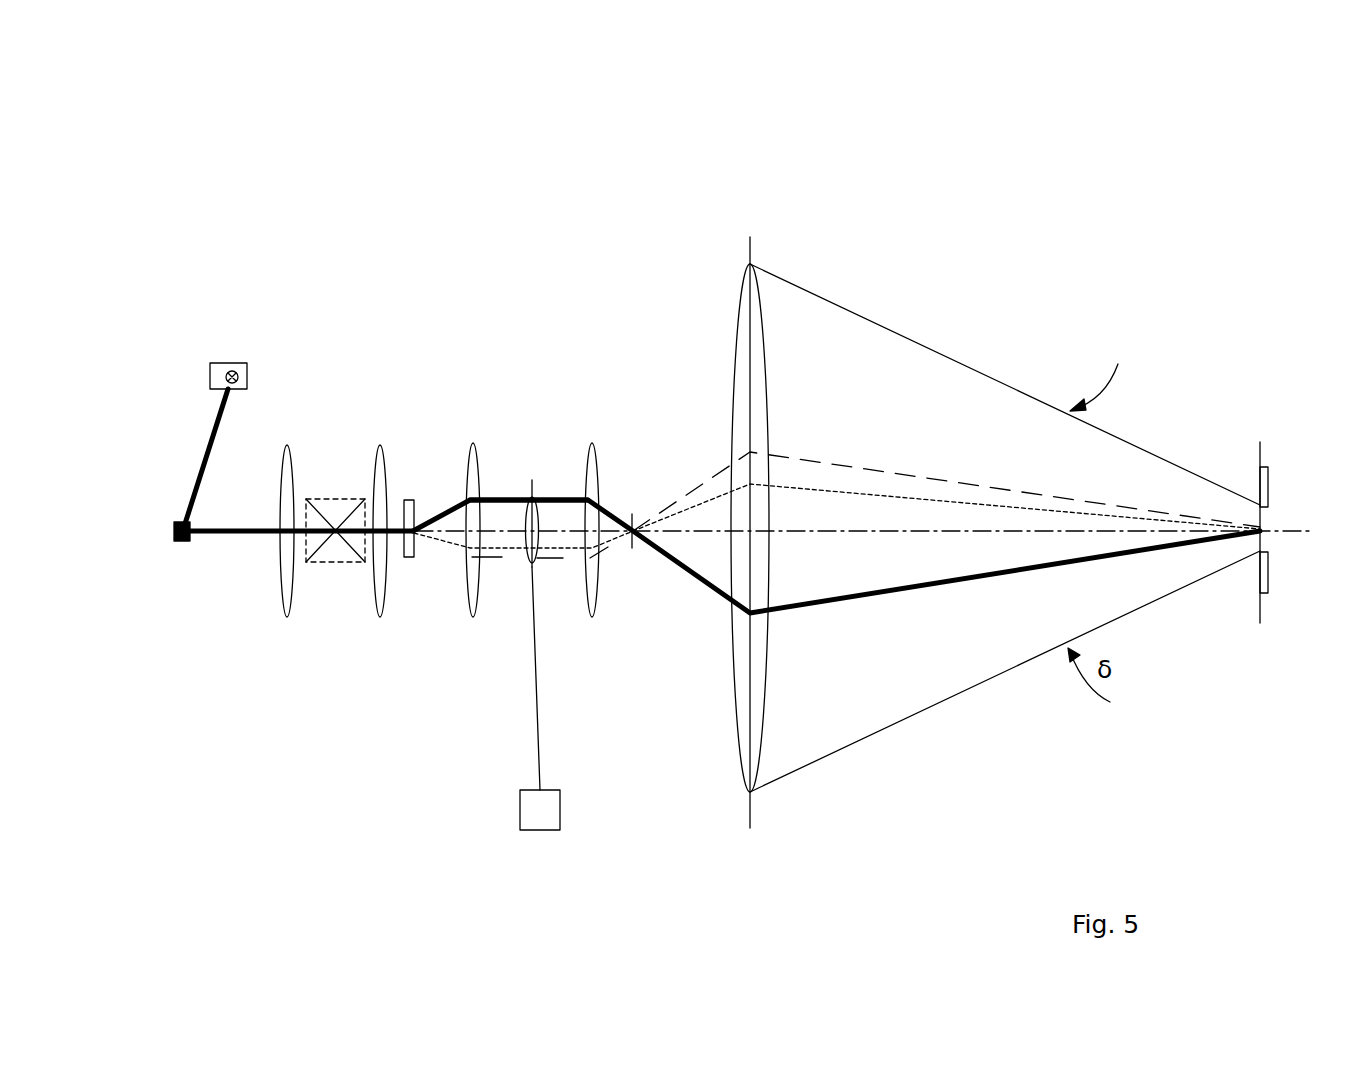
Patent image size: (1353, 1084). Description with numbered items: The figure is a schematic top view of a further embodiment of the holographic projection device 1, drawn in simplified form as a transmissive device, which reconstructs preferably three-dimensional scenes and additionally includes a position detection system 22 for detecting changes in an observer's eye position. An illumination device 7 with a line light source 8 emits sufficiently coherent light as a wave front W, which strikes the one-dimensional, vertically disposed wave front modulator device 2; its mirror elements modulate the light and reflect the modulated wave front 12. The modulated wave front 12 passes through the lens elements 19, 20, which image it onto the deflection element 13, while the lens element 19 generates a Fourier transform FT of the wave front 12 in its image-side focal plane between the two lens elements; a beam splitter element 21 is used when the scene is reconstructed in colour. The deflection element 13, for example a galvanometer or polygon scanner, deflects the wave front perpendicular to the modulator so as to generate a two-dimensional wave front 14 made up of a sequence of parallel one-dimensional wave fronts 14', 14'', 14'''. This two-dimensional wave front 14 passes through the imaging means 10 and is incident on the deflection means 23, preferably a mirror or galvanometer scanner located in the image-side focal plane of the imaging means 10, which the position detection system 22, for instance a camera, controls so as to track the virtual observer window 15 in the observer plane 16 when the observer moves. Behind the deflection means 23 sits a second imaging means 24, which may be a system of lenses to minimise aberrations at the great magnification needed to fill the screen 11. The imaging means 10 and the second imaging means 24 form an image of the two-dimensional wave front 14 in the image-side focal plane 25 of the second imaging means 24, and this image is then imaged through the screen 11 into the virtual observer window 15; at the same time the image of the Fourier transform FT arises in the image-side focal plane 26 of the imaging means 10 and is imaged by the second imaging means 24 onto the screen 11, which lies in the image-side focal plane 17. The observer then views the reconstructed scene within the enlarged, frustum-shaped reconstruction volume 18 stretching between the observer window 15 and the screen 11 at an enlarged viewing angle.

The holographic projection device 1 is at (300, 208).
The wave front modulator device 2 is at (177, 542).
The wave front W is at (213, 435).
The illumination device 7 is at (215, 368).
The line light source 8 is at (232, 371).
The imaging means 10 is at (472, 445).
The screen 11 is at (742, 335).
The modulated wave front 12 is at (230, 535).
The deflection element 13 is at (408, 503).
The two-dimensional wave front 14 is at (836, 512).
The one-dimensional wave front 14' is at (529, 400).
The one-dimensional wave front 14'' is at (817, 617).
The one-dimensional wave front 14''' is at (861, 601).
The virtual observer window 15 is at (1268, 520).
The observer plane 16 is at (1258, 610).
The image-side focal plane 17 is at (752, 807).
The reconstruction volume 18 is at (922, 383).
The lens element 19 is at (282, 578).
The lens element 20 is at (382, 585).
The beam splitter element 21 is at (335, 506).
The Fourier transform FT is at (333, 530).
The position detection system 22 is at (540, 698).
The deflection means 23 is at (525, 493).
The second imaging means 24 is at (597, 467).
The image-side focal plane of the second imaging means 25 is at (633, 548).
The image-side focal plane of the imaging means 26 is at (542, 560).